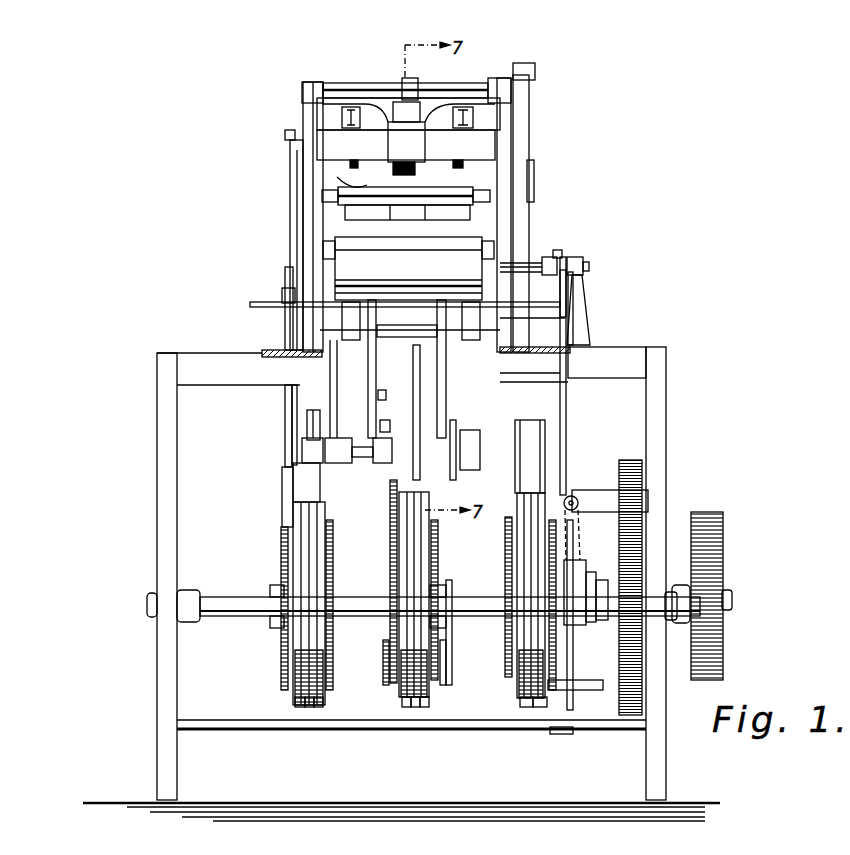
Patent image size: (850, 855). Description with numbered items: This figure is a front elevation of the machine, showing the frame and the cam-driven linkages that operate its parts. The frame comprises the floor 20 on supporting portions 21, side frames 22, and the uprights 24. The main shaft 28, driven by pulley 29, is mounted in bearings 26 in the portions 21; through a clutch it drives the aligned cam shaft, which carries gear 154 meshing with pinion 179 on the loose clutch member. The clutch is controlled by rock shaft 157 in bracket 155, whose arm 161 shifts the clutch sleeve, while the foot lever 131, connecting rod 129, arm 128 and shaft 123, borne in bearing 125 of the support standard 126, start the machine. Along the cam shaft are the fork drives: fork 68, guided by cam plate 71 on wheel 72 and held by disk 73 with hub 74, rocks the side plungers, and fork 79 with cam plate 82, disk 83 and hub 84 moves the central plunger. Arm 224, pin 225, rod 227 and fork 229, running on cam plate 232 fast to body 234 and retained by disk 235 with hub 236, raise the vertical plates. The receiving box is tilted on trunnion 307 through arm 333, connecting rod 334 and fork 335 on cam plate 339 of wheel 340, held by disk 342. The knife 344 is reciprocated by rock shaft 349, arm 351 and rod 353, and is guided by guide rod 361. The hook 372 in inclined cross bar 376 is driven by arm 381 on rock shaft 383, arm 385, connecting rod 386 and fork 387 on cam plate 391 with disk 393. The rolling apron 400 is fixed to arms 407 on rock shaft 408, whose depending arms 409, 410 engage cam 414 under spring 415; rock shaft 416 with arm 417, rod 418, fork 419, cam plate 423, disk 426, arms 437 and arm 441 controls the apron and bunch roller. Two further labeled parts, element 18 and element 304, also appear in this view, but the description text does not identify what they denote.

The rod 18 is at (414, 420).
The floor 20 is at (625, 345).
The supporting portions 21 is at (165, 478).
The side frames 22 is at (340, 400).
The uprights 24 is at (303, 113).
The bearings 26 is at (150, 600).
The main shaft 28 is at (230, 616).
The pulley 29 is at (712, 543).
The fork 68 is at (400, 550).
The cam plate 71 is at (405, 707).
The wheel 72 is at (416, 707).
The disk 73 is at (386, 686).
The hub 74 is at (433, 620).
The fork 79 is at (398, 500).
The cam plate 82 is at (425, 707).
The disk 83 is at (449, 686).
The hub 84 is at (440, 588).
The shaft 123 is at (583, 262).
The bearing 125 is at (585, 260).
The support standard 126 is at (585, 295).
The arm 128 is at (556, 262).
The connecting rod 129 is at (590, 266).
The foot lever 131 is at (570, 735).
The gear 154 is at (637, 468).
The bracket 155 is at (630, 500).
The rock shaft 157 is at (575, 498).
The arm 161 is at (582, 534).
The pinion 179 is at (640, 582).
The arm 224 is at (285, 282).
The pin 225 is at (282, 298).
The rod 227 is at (287, 412).
The fork 229 is at (285, 490).
The cam plate 232 is at (299, 707).
The body 234 is at (308, 707).
The disk 235 is at (293, 543).
The hub 236 is at (275, 628).
The rod 304 is at (563, 257).
The trunnion 307 is at (340, 200).
The arm 333 is at (532, 180).
The connecting rod 334 is at (566, 395).
The fork 335 is at (518, 482).
The cam plate 339 is at (526, 707).
The wheel 340 is at (540, 707).
The disk 342 is at (517, 660).
The knife 344 is at (522, 168).
The rock shaft 349 is at (285, 135).
The arm 351 is at (290, 153).
The rod 353 is at (297, 245).
The guide rod 361 is at (337, 180).
The hook 372 is at (417, 170).
The inclined cross bar 376 is at (520, 160).
The arm 381 is at (420, 82).
The rock shaft 383 is at (384, 66).
The arm 385 is at (520, 63).
The connecting rod 386 is at (557, 250).
The fork 387 is at (572, 495).
The cam plate 391 is at (565, 712).
The disk 393 is at (556, 663).
The rolling apron 400 is at (408, 268).
The arms 407 is at (330, 333).
The rock shaft 408 is at (388, 335).
The depending arm 409 is at (446, 360).
The depending arm 410 is at (369, 363).
The cam 414 is at (380, 397).
The spring 415 is at (385, 432).
The rock shaft 416 is at (378, 465).
The arm 417 is at (310, 430).
The rod 418 is at (305, 480).
The fork 419 is at (322, 550).
The cam plate 423 is at (318, 707).
The disk 426 is at (415, 668).
The arms 437 is at (330, 372).
The arm 441 is at (455, 430).